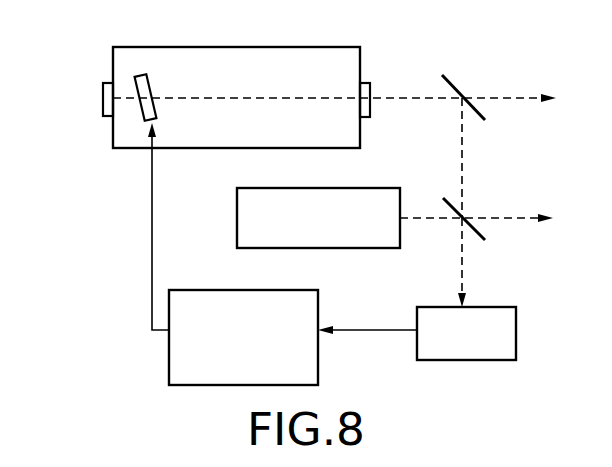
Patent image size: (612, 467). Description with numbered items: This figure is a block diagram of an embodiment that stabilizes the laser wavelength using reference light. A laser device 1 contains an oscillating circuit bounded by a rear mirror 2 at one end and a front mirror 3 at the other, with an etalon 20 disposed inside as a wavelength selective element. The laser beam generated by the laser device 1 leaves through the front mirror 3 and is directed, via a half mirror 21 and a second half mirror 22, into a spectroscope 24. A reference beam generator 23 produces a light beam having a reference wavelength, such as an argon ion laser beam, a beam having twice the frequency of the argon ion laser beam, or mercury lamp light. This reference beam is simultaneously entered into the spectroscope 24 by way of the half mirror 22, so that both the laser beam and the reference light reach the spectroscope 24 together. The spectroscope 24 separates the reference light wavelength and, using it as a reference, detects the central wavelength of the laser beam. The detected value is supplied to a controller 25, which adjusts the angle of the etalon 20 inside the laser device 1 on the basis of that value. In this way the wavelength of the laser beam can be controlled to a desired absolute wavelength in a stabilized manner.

The laser device 1 is at (330, 47).
The rear mirror 2 is at (103, 108).
The front mirror 3 is at (372, 84).
The etalon 20 is at (152, 88).
The half mirror 21 is at (460, 92).
The half mirror 22 is at (466, 213).
The reference beam generator 23 is at (383, 187).
The spectroscope 24 is at (500, 307).
The controller 25 is at (318, 310).